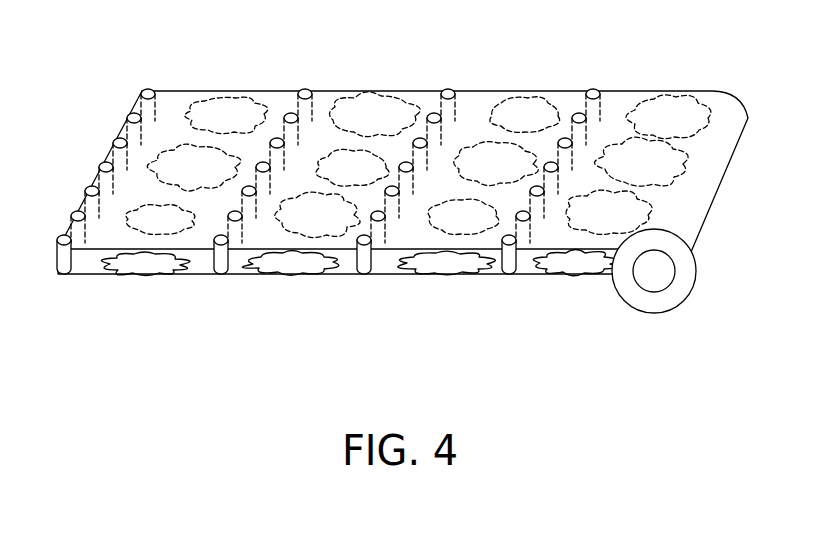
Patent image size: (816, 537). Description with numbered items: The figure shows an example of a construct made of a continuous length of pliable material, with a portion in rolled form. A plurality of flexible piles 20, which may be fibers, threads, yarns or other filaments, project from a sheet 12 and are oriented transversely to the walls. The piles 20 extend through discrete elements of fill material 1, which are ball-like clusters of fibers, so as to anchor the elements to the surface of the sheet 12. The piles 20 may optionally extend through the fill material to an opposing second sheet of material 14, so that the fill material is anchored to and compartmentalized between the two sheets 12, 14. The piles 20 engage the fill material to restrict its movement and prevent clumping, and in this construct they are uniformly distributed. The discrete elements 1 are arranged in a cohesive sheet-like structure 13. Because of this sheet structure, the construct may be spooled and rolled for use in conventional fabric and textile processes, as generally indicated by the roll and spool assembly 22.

The discrete elements 1 is at (525, 110).
The sheet 12 is at (275, 100).
The cohesive sheet-like structure 13 is at (118, 266).
The second sheet of material 14 is at (337, 275).
The flexible piles 20 is at (150, 89).
The roll and spool assembly 22 is at (654, 312).